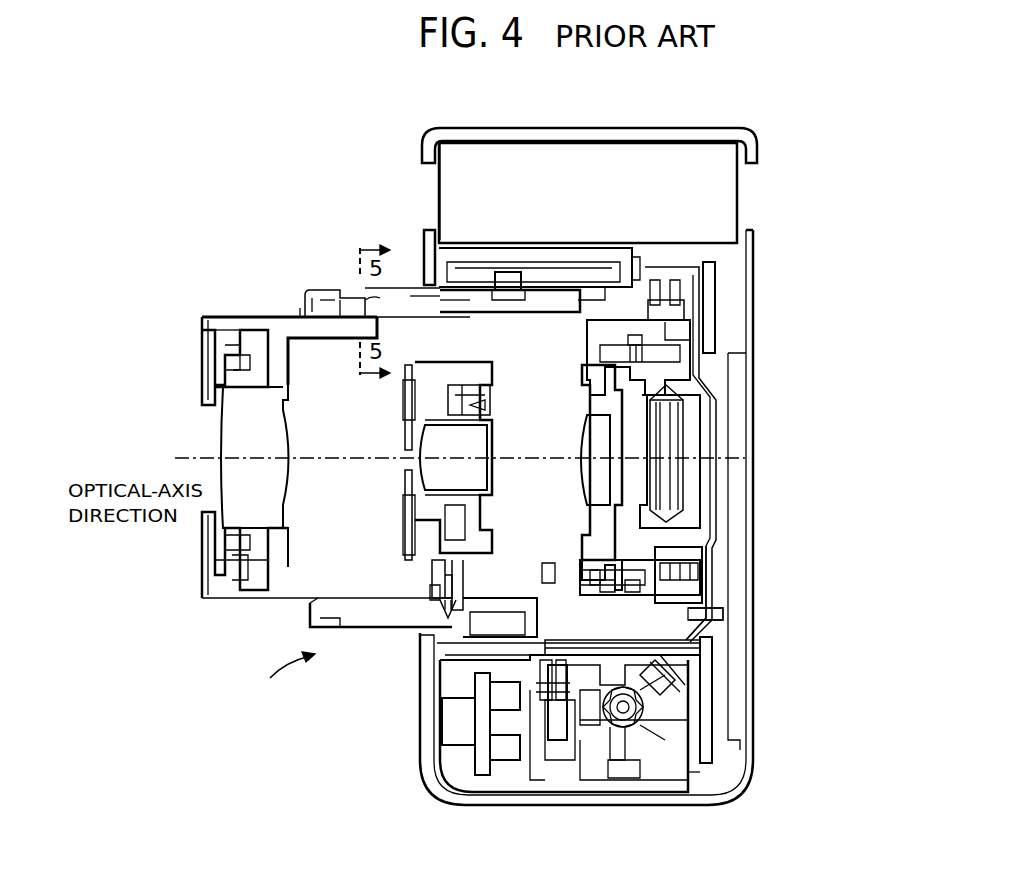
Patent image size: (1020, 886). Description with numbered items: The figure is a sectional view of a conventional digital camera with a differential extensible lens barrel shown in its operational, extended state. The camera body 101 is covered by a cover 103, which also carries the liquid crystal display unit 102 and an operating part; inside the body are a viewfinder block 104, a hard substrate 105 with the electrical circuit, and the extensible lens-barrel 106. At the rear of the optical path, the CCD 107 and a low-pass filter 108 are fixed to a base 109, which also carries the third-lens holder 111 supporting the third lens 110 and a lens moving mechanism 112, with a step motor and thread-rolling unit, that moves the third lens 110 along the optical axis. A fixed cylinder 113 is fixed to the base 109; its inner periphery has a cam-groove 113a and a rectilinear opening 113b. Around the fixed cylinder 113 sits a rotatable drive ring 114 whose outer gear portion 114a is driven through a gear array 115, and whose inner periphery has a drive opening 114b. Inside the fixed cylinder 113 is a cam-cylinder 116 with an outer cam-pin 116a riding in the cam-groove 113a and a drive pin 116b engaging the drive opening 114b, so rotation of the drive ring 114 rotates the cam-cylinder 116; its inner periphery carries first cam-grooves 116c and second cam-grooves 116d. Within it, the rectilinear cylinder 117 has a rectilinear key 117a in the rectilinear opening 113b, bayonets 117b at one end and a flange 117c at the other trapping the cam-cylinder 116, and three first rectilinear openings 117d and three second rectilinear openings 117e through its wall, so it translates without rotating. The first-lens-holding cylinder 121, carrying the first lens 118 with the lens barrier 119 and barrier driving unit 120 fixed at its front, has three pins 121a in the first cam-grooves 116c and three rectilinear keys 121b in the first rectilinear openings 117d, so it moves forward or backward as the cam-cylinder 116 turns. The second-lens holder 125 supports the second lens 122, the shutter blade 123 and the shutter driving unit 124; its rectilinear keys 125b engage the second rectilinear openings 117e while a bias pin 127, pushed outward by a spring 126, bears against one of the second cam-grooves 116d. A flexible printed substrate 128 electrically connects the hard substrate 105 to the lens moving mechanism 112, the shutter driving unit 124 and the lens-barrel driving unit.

The camera body 101 is at (715, 297).
The liquid crystal display unit 102 is at (746, 383).
The cover 103 is at (664, 140).
The viewfinder block 104 is at (552, 165).
The hard substrate 105 is at (483, 767).
The extensible lens-barrel 106 is at (280, 677).
The CCD 107 is at (697, 430).
The low-pass filter 108 is at (660, 490).
The base 109 is at (680, 352).
The third lens 110 is at (592, 440).
The third-lens holder 111 is at (590, 528).
The lens moving mechanism 112 is at (700, 540).
The fixed cylinder 113 is at (518, 640).
The cam-groove 113a is at (445, 735).
The rectilinear opening 113b is at (465, 673).
The drive ring 114 is at (686, 663).
The gear portion 114a is at (670, 670).
The drive opening 114b is at (571, 268).
The gear array 115 is at (630, 760).
The cam-cylinder 116 is at (478, 312).
The cam-pin 116a is at (440, 700).
The drive pin 116b is at (505, 280).
The first cam-grooves 116c is at (355, 300).
The second cam-grooves 116d is at (447, 670).
The rectilinear cylinder 117 is at (510, 315).
The rectilinear key 117a is at (706, 628).
The bayonets 117b is at (300, 315).
The flange 117c is at (578, 304).
The first rectilinear openings 117d is at (440, 312).
The second rectilinear openings 117e is at (495, 605).
The first lens 118 is at (232, 436).
The lens barrier 119 is at (215, 367).
The barrier driving unit 120 is at (265, 570).
The first-lens-holding cylinder 121 is at (240, 318).
The pins 121a is at (340, 305).
The rectilinear keys 121b is at (320, 312).
The second lens 122 is at (473, 468).
The shutter blade 123 is at (410, 430).
The shutter driving unit 124 is at (470, 408).
The second-lens holder 125 is at (413, 510).
The rectilinear keys 125b is at (432, 590).
The spring 126 is at (440, 572).
The bias pin 127 is at (440, 620).
The flexible printed substrate 128 is at (702, 575).